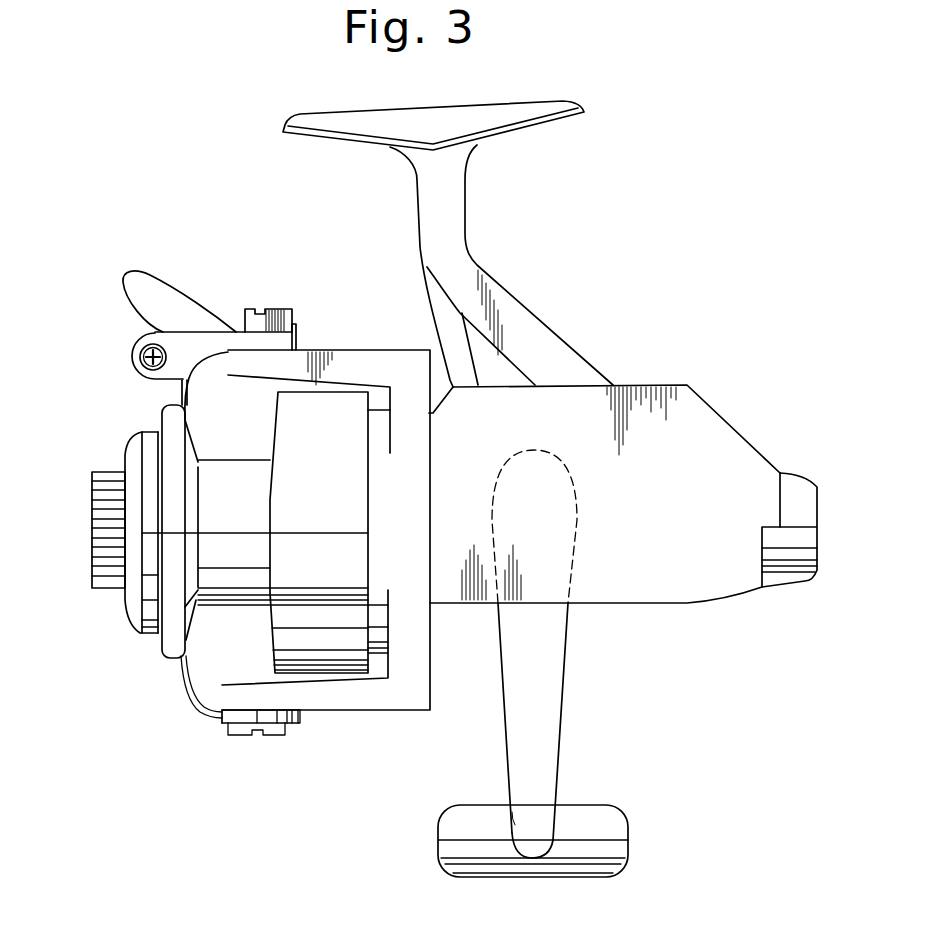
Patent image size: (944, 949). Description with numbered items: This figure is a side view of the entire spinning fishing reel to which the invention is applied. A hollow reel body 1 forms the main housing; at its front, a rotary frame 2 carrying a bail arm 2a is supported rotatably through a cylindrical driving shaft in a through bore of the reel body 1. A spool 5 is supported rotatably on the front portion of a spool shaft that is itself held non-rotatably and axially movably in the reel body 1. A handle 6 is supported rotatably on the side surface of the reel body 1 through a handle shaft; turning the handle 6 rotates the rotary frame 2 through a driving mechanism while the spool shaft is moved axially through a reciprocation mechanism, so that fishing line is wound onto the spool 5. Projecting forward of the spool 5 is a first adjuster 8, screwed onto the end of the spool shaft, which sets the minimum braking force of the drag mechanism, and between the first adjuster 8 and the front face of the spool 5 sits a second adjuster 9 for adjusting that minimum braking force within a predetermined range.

The reel body 1 is at (598, 400).
The rotary frame 2 is at (332, 350).
The bail arm 2a is at (177, 395).
The spool 5 is at (230, 468).
The handle 6 is at (555, 678).
The first adjuster 8 is at (103, 492).
The second adjuster 9 is at (130, 442).